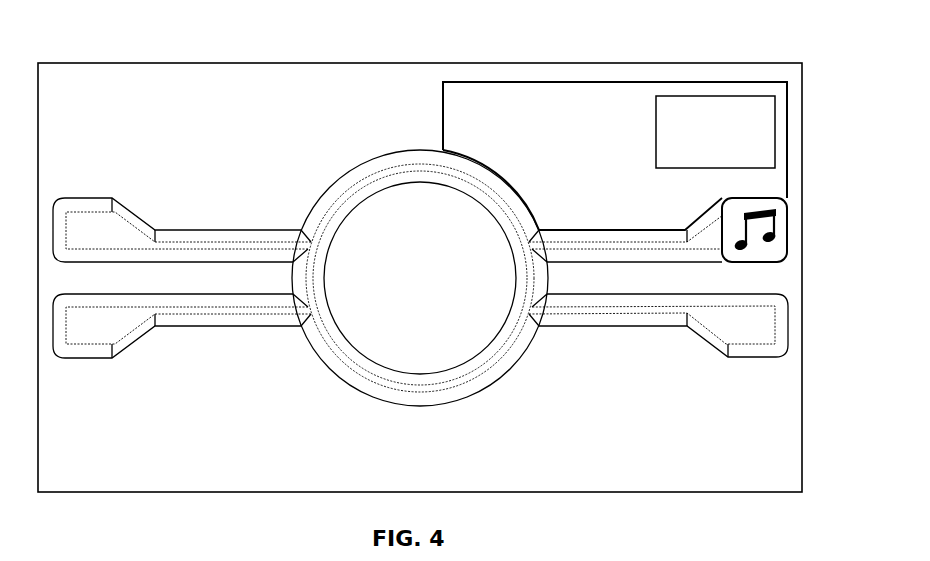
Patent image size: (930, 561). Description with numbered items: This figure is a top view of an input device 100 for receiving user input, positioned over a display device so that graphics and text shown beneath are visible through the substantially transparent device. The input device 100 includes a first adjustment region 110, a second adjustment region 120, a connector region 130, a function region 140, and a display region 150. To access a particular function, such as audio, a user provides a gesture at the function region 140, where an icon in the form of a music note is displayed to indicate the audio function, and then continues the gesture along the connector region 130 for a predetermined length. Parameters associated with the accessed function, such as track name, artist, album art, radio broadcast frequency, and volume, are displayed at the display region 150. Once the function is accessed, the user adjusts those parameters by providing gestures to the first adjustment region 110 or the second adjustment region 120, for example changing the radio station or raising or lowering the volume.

The input device 100 is at (108, 40).
The first adjustment region 110 is at (392, 235).
The second adjustment region 120 is at (333, 206).
The connector region 130 is at (660, 245).
The function region 140 is at (773, 250).
The display region 150 is at (628, 104).